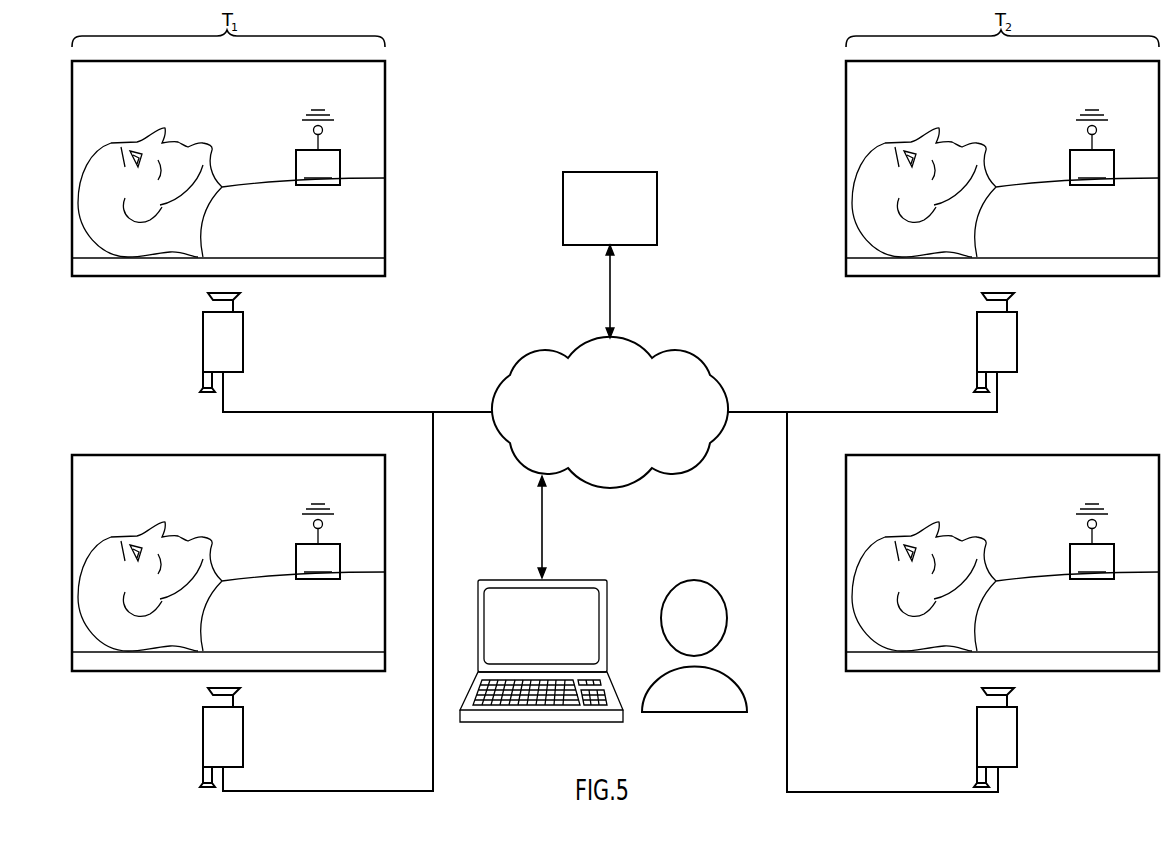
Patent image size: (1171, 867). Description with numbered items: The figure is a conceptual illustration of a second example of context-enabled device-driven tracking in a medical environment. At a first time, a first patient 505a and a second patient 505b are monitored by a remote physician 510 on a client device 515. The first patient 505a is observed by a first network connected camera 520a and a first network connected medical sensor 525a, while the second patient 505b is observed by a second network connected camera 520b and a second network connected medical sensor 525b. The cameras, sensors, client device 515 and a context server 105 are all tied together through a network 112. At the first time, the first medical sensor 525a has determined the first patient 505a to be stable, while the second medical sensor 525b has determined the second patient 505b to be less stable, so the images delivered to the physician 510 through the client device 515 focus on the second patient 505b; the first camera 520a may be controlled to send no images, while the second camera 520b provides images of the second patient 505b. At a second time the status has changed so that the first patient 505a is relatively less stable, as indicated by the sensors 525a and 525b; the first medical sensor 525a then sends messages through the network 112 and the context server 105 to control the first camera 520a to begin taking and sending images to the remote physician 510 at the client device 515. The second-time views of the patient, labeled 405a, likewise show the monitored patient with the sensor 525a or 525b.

The first patient 505a is at (231, 175).
The second patient 505b is at (231, 569).
The patient at second time 405a is at (1005, 372).
The first network connected medical sensor 525a is at (705, 147).
The second network connected medical sensor 525b is at (705, 541).
The first network connected camera 520a is at (588, 342).
The second network connected camera 520b is at (588, 737).
The context server 105 is at (609, 172).
The network 112 is at (702, 358).
The client device 515 is at (577, 580).
The remote physician 510 is at (729, 616).